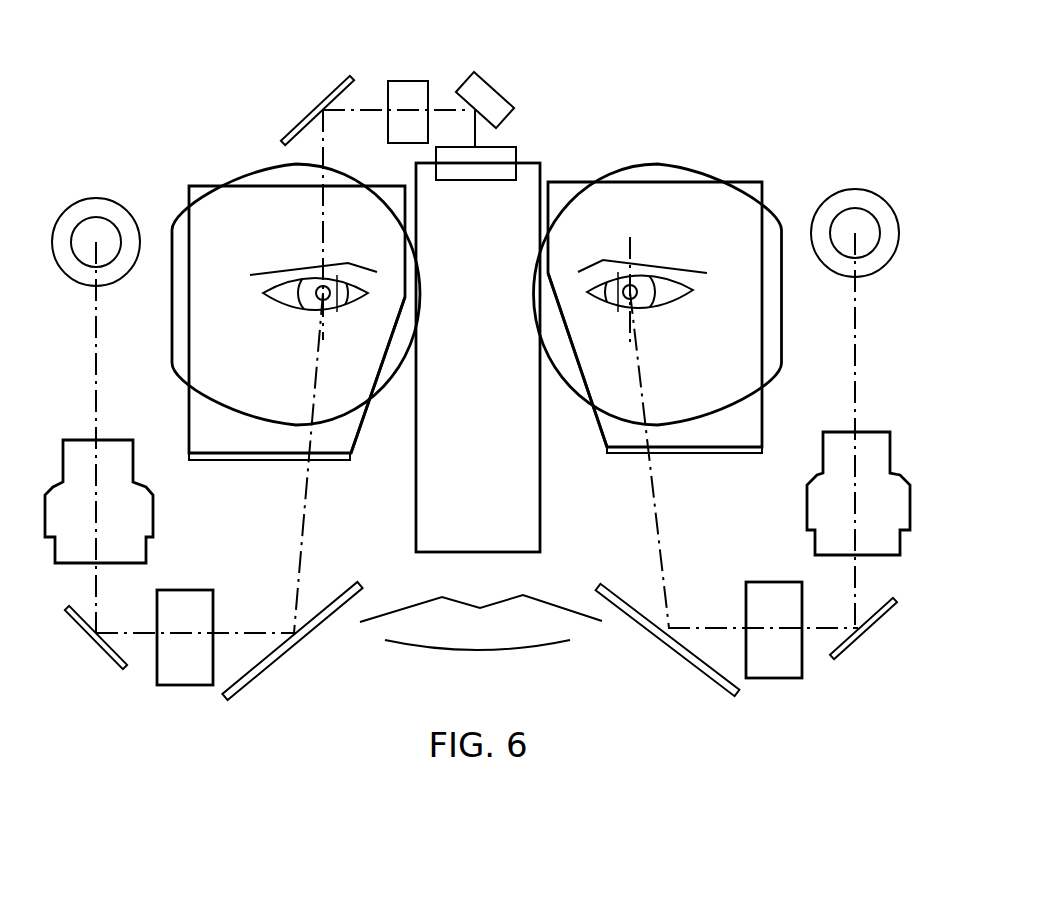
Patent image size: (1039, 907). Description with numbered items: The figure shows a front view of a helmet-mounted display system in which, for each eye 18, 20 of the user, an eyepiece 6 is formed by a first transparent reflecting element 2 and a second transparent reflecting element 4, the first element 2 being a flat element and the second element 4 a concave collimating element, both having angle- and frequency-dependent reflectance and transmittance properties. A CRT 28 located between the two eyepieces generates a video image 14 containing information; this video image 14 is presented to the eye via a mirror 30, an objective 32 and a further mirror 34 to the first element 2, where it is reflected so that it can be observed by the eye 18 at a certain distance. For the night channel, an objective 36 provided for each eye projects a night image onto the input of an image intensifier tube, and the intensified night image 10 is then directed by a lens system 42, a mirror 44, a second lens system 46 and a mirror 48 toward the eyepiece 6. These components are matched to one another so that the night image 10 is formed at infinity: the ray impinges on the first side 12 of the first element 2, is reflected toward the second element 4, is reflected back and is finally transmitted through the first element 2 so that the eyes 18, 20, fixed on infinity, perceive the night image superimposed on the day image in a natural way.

The first transparent reflecting element 2 is at (330, 462).
The second transparent reflecting element 4 is at (386, 370).
The eyepiece 6 is at (243, 172).
The light ray of night image 10 is at (307, 488).
The first side of the first element 12 is at (740, 425).
The light ray of video image 14 is at (323, 135).
The eye 18 is at (302, 310).
The eye 20 is at (650, 293).
The CRT 28 is at (493, 446).
The mirror 30 is at (483, 93).
The objective 32 is at (407, 88).
The mirror 34 is at (330, 92).
The objective 36 is at (87, 227).
The lens system 42 is at (118, 535).
The mirror 44 is at (103, 652).
The lens system 46 is at (178, 672).
The mirror 48 is at (270, 667).